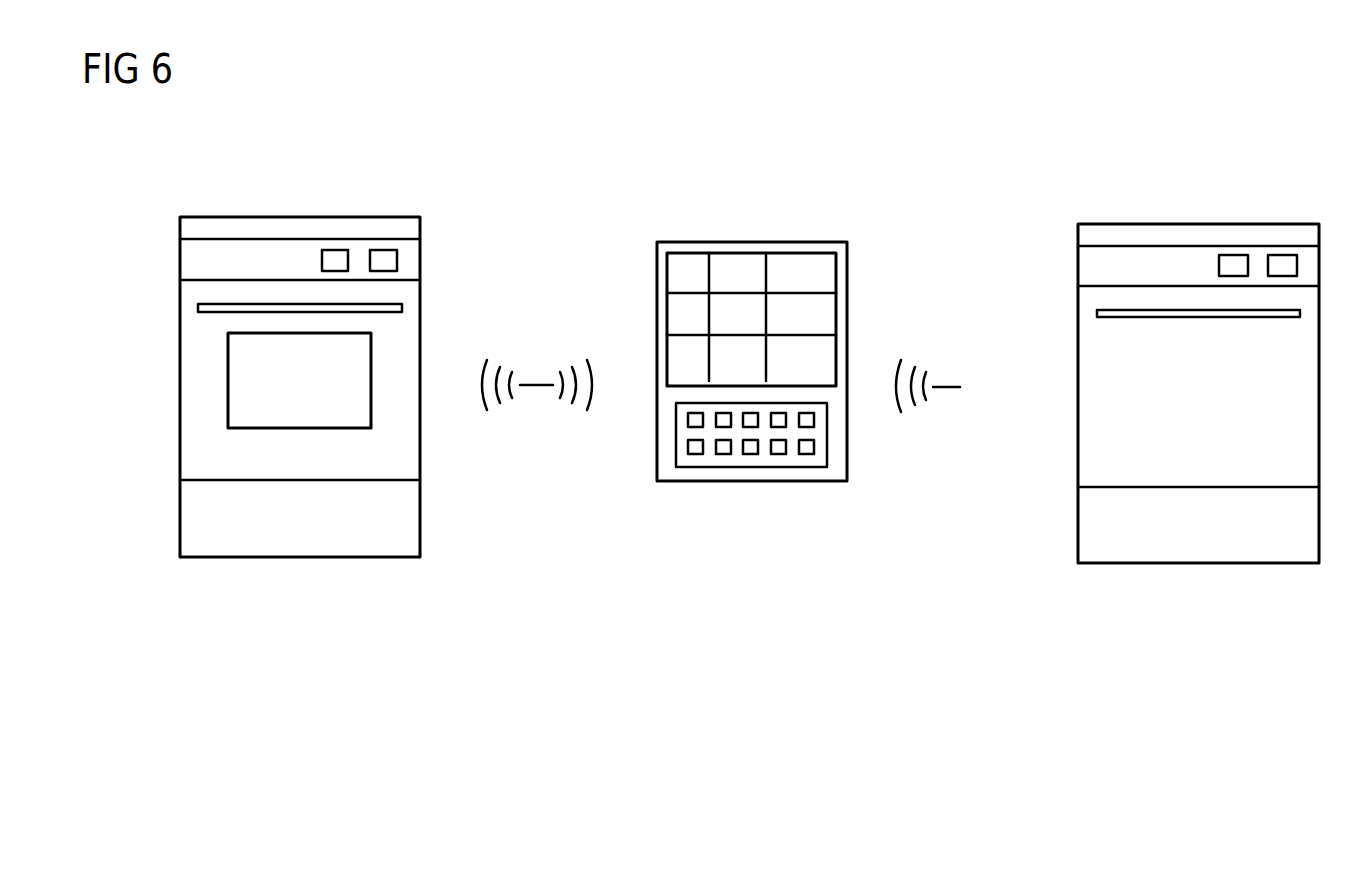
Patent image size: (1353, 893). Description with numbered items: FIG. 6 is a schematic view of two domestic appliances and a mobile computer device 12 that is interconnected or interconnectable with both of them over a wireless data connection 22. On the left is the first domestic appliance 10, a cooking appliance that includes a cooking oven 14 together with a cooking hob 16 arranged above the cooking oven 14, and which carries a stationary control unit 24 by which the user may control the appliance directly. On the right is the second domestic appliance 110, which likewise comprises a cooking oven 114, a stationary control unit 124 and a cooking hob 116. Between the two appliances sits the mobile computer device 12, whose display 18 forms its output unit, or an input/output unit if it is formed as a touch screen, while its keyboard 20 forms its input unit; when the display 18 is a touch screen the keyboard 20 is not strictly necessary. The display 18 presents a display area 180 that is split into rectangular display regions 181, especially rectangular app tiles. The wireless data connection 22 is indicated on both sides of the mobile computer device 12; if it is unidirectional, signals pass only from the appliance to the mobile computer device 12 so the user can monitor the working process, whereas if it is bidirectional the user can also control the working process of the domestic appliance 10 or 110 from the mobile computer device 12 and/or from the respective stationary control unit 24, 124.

The domestic appliance 10 is at (166, 203).
The mobile computer device 12 is at (685, 208).
The cooking oven 14 is at (200, 380).
The cooking hob 16 is at (340, 230).
The display 18 is at (793, 280).
The keyboard 20 is at (710, 457).
The wireless data connection 22 is at (535, 385).
The stationary control unit 24 is at (245, 260).
The second domestic appliance 110 is at (1066, 208).
The cooking oven 114 is at (1098, 388).
The cooking hob 116 is at (1237, 235).
The stationary control unit 124 is at (1145, 265).
The display area 180 is at (820, 262).
The rectangular display regions 181 is at (698, 281).